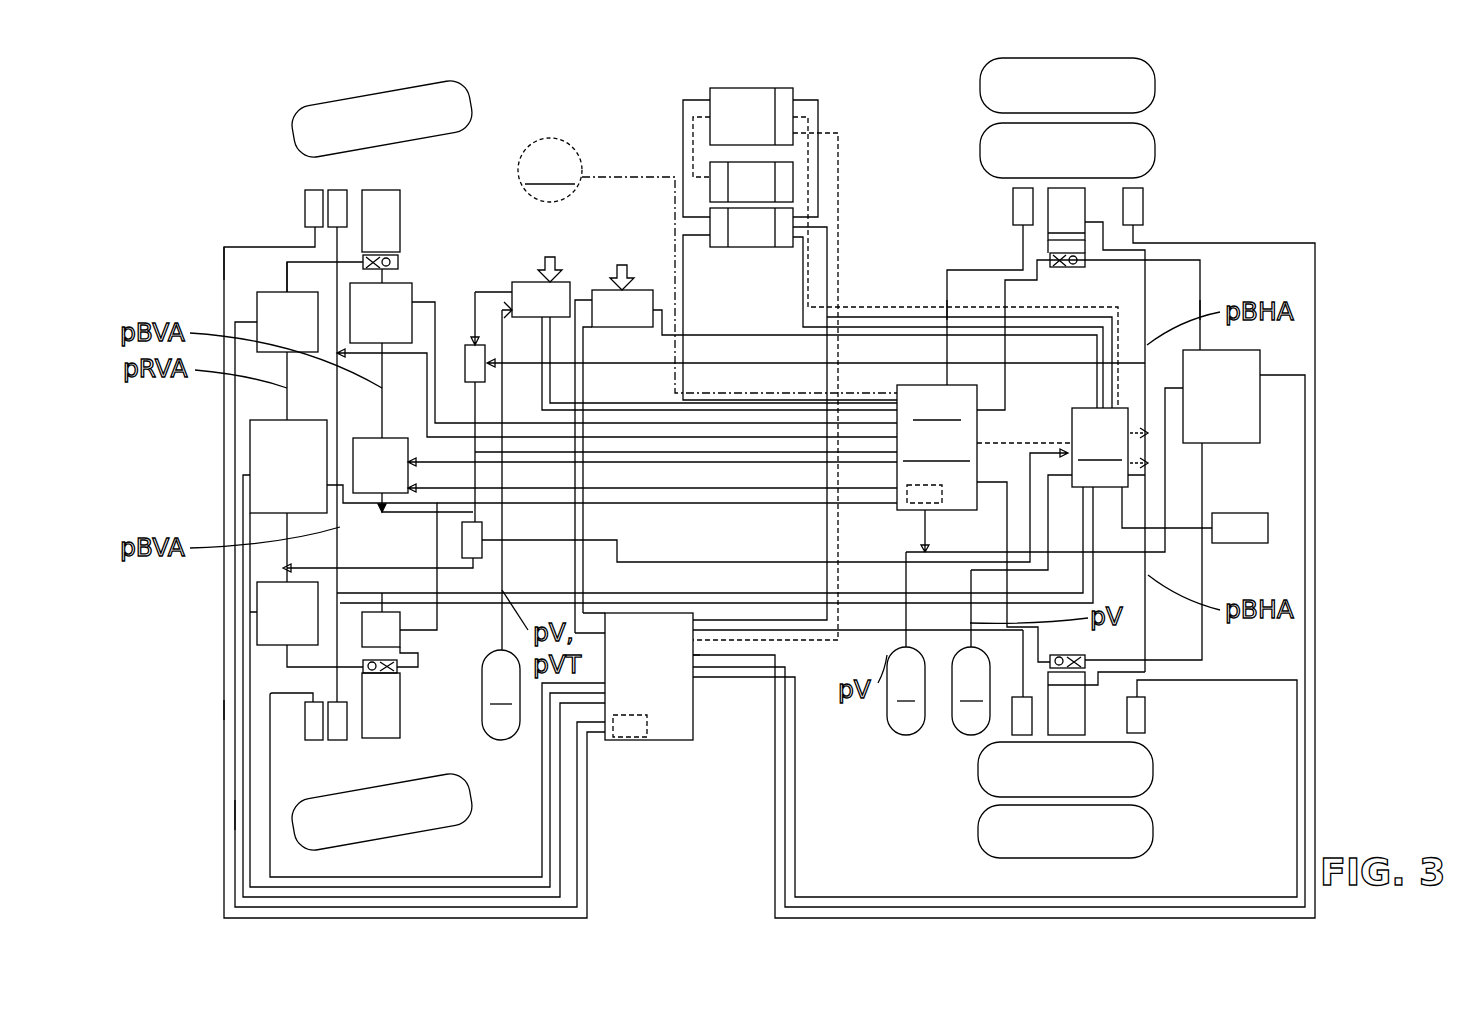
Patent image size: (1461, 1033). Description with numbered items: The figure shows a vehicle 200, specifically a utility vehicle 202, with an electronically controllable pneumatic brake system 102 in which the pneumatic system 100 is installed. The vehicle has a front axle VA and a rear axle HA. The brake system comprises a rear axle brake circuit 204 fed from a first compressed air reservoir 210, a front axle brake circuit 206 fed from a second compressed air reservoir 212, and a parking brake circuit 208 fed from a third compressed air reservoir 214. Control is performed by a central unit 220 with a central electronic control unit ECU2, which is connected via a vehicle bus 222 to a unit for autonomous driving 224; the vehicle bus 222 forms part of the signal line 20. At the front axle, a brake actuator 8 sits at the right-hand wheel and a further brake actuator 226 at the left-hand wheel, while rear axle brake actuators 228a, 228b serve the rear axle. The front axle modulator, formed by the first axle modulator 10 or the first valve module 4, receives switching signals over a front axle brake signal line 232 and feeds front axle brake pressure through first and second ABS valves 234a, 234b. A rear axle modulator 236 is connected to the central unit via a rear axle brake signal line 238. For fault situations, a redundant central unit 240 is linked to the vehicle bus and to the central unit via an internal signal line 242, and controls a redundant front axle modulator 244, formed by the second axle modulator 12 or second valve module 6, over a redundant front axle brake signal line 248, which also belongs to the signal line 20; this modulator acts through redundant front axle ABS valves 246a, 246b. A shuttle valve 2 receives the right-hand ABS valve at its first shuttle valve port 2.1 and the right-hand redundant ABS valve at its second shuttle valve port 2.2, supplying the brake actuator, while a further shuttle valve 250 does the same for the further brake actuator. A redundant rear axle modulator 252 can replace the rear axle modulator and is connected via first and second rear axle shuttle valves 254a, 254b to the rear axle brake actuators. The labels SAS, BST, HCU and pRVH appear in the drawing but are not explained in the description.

The vehicle 200 is at (148, 164).
The utility vehicle 202 is at (205, 140).
The pneumatic system 100 is at (147, 205).
The brake system 102 is at (210, 195).
The brake actuator 8 is at (400, 215).
The shuttle valve 2 is at (394, 256).
The first shuttle valve port 2.1 is at (398, 263).
The second shuttle valve port 2.2 is at (363, 260).
The redundant front axle ABS valve 246a is at (257, 305).
The first ABS valve 234a is at (412, 300).
The rear axle modulator 236 is at (597, 441).
The first valve module 4 is at (597, 441).
The first axle modulator 10 is at (360, 437).
The redundant front axle modulator 244 is at (197, 466).
The second valve module 6 is at (197, 466).
The second axle modulator 12 is at (250, 450).
The signal line 20 is at (243, 565).
The redundant front axle ABS valve 246b is at (250, 623).
The second ABS valve 234b is at (363, 637).
The front axle brake circuit 206 is at (213, 710).
The further brake actuator 226 is at (383, 740).
The redundant front axle brake signal line 248 is at (235, 813).
The further shuttle valve 250 is at (398, 675).
The second compressed air reservoir 212 is at (505, 742).
The redundant central unit 240 is at (650, 742).
The internal signal line 242 is at (752, 650).
The unit for autonomous driving 224 is at (735, 88).
The vehicle bus 222 is at (693, 317).
The front axle brake signal line 232 is at (705, 455).
The central unit 220 is at (1022, 447).
The rear axle brake signal line 238 is at (1028, 440).
The rear axle brake circuit 204 is at (942, 200).
The rear axle brake actuator 228a is at (1140, 190).
The parking brake circuit 208 is at (1188, 225).
The first rear axle shuttle valve 254a is at (1075, 267).
The redundant rear axle modulator 252 is at (1262, 423).
The second rear axle shuttle valve 254b is at (1065, 655).
The rear axle brake actuator 228b is at (1067, 737).
The first compressed air reservoir 210 is at (893, 720).
The third compressed air reservoir 214 is at (957, 720).
The front axle VA is at (352, 92).
The rear axle HA is at (975, 93).
The steering angle sensor SAS is at (707, 265).
The brake signal transmitter BST is at (704, 333).
The hand control unit HCU is at (844, 336).
The second electronic control unit ECU2 is at (1022, 447).
The rear axle control pressure pRVH is at (1205, 490).